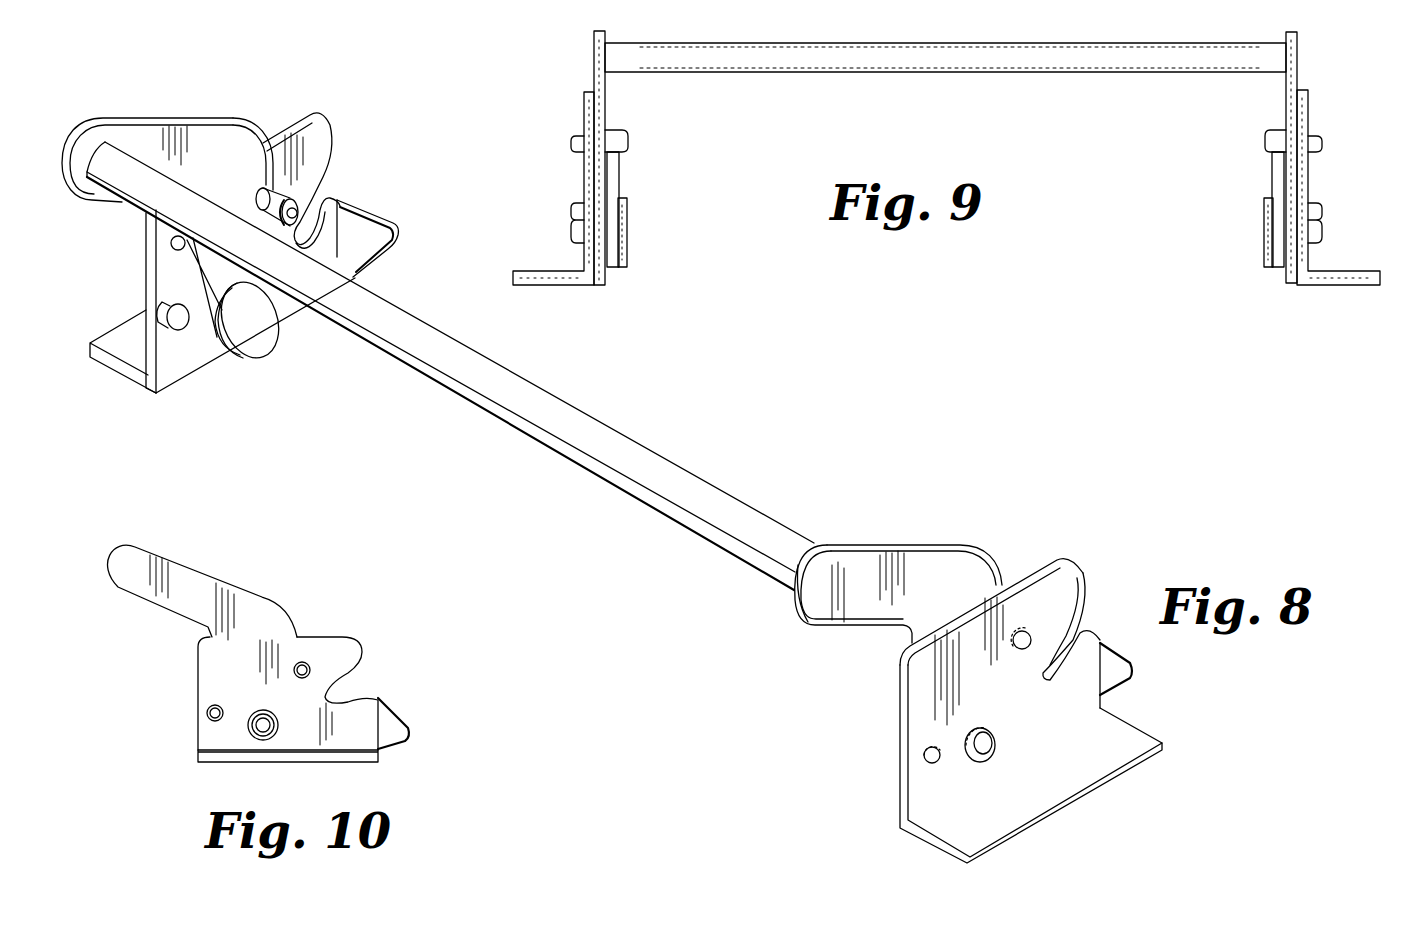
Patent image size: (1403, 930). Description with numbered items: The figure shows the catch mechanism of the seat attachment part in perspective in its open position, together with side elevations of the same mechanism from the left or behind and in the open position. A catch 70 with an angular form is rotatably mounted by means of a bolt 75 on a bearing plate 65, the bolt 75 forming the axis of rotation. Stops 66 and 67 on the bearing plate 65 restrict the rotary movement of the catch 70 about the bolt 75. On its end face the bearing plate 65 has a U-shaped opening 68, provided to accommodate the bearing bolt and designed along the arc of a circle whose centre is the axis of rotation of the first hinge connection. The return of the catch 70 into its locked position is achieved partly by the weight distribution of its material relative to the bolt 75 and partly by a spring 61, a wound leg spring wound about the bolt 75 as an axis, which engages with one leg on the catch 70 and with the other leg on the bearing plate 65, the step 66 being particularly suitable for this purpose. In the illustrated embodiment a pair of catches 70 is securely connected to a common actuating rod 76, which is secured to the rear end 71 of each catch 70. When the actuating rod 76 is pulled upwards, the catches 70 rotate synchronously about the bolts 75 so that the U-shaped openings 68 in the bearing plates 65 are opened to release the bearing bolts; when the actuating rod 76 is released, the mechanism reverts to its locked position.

In FIG. 9, the spring 61 is at (613, 270).
In FIG. 9, the bearing plate 65 is at (587, 183).
In FIG. 8, the bearing plate 65 is at (320, 143).
In FIG. 10, the bearing plate 65 is at (272, 673).
In FIG. 8, the stop 66 is at (1031, 635).
In FIG. 8, the stop 67 is at (183, 327).
In FIG. 8, the U-shaped opening 68 is at (1076, 623).
In FIG. 10, the U-shaped opening 68 is at (347, 693).
In FIG. 9, the catch 70 is at (600, 108).
In FIG. 8, the catch 70 is at (230, 168).
In FIG. 10, the catch 70 is at (175, 588).
In FIG. 8, the rear end of the catch 71 is at (822, 600).
In FIG. 9, the bolt 75 is at (625, 225).
In FIG. 8, the bolt 75 is at (253, 330).
In FIG. 10, the bolt 75 is at (263, 733).
In FIG. 9, the actuating rod 76 is at (905, 72).
In FIG. 8, the actuating rod 76 is at (447, 378).